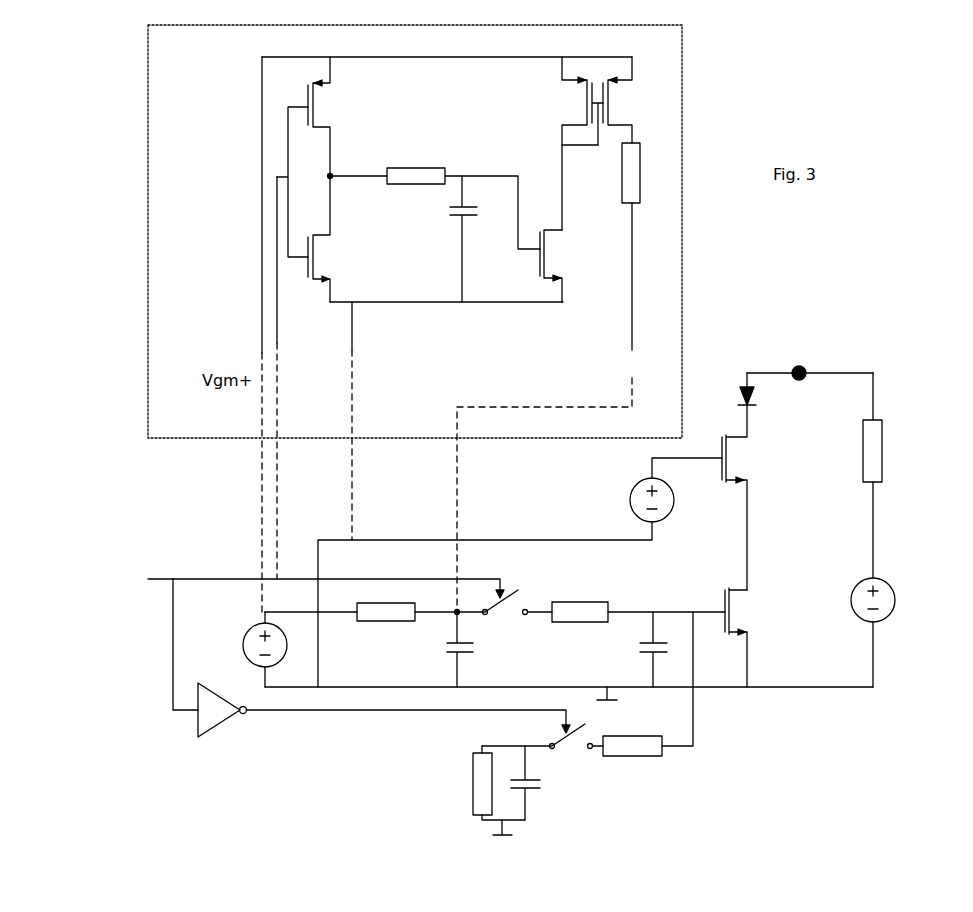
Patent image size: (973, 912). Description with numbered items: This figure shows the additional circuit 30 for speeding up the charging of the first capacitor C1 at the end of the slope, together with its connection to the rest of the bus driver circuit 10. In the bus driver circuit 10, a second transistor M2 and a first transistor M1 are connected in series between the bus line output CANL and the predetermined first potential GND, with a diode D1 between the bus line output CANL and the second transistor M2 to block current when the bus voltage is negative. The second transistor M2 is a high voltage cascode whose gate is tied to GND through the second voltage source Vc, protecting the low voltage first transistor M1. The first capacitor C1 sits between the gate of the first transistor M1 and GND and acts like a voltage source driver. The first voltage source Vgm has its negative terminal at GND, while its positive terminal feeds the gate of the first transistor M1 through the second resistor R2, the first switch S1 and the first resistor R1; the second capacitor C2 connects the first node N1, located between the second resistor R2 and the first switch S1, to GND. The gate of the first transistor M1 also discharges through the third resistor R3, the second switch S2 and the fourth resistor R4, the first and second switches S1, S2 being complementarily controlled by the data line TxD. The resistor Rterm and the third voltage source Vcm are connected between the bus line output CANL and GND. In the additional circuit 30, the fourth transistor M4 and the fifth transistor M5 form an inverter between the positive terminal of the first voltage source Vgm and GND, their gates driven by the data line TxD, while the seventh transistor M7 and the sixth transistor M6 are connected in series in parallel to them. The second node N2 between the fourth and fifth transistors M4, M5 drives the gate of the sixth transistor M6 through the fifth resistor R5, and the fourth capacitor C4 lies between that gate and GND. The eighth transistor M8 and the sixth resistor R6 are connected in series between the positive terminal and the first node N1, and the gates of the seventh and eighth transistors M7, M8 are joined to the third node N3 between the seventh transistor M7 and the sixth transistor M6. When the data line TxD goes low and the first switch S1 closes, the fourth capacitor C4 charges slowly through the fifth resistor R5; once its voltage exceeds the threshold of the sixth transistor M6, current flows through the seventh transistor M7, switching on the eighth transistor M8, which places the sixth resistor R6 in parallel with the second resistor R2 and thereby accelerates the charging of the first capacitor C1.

The additional circuit 30 is at (147, 196).
The bus driver circuit 10 is at (108, 648).
The data line TxD is at (326, 352).
The fourth transistor M4 is at (331, 116).
The fifth transistor M5 is at (331, 239).
The sixth transistor M6 is at (560, 266).
The seventh transistor M7 is at (570, 143).
The eighth transistor M8 is at (632, 100).
The second node N2 is at (358, 165).
The third node N3 is at (564, 147).
The first node N1 is at (537, 409).
The fifth resistor R5 is at (463, 196).
The sixth resistor R6 is at (615, 173).
The fourth capacitor C4 is at (447, 239).
The predetermined first potential GND is at (495, 512).
The first voltage source Vgm is at (243, 649).
The second resistor R2 is at (361, 624).
The first switch S1 is at (504, 614).
The first resistor R1 is at (638, 602).
The second capacitor C2 is at (472, 649).
The second voltage source Vc is at (664, 490).
The second transistor M2 is at (753, 497).
The diode D1 is at (729, 393).
The bus line output CANL is at (810, 352).
The resistor Rterm is at (902, 475).
The third voltage source Vcm is at (893, 632).
The first transistor M1 is at (754, 637).
The first capacitor C1 is at (642, 649).
The third resistor R3 is at (643, 702).
The second switch S2 is at (537, 754).
The fourth resistor R4 is at (480, 783).